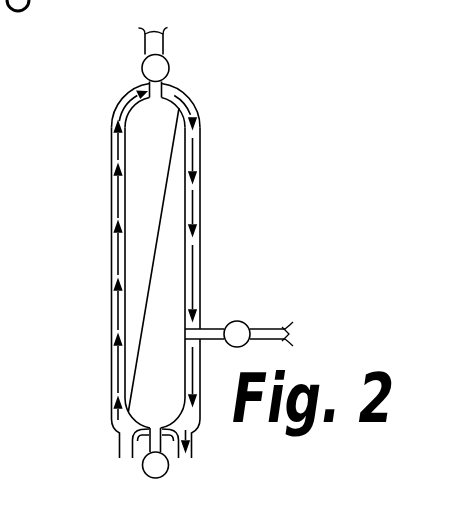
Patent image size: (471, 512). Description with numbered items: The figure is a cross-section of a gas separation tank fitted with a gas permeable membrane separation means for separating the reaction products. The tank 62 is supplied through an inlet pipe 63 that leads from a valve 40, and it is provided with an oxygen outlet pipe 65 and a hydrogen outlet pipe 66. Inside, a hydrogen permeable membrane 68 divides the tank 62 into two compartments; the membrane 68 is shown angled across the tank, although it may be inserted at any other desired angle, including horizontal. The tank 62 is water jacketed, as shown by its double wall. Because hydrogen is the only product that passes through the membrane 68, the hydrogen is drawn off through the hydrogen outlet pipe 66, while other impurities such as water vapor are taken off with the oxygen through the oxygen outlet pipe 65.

The tank 62 is at (104, 185).
The hydrogen permeable membrane 68 is at (161, 206).
The hydrogen outlet pipe 66 is at (167, 81).
The oxygen outlet pipe 65 is at (209, 330).
The inlet pipe 63 is at (148, 450).
The valve 40 is at (169, 471).